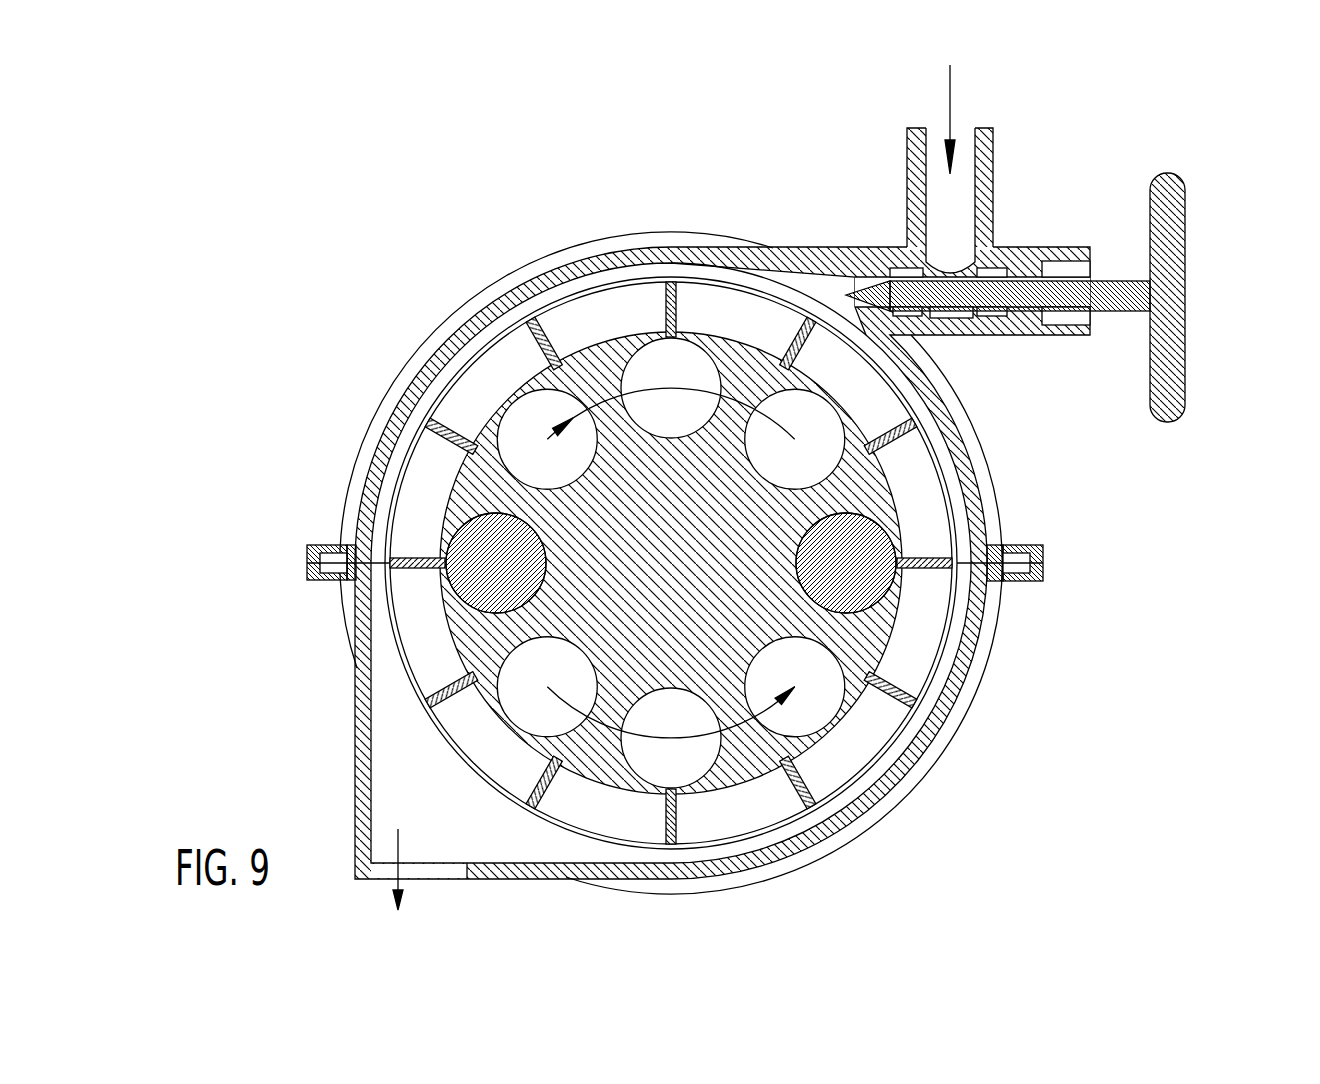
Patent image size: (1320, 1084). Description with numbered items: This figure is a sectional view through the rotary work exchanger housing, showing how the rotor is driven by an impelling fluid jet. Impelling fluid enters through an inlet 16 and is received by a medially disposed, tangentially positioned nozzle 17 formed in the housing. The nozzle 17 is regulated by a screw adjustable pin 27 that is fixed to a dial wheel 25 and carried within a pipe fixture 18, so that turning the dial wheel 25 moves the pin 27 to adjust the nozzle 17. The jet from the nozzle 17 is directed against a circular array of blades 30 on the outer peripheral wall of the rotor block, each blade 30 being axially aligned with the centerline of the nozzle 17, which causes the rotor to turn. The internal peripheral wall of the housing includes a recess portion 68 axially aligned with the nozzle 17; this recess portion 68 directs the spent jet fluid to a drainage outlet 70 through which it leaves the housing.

The inlet 16 is at (907, 165).
The nozzle 17 is at (872, 270).
The pipe fixture 18 is at (1040, 253).
The dial wheel 25 is at (1187, 217).
The screw adjustable pin 27 is at (968, 335).
The blade 30 is at (667, 303).
The recess portion 68 is at (395, 786).
The drainage outlet 70 is at (418, 877).